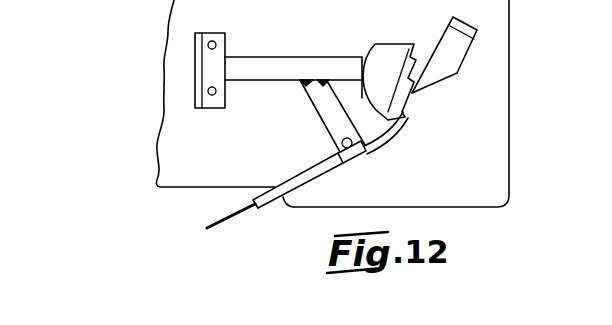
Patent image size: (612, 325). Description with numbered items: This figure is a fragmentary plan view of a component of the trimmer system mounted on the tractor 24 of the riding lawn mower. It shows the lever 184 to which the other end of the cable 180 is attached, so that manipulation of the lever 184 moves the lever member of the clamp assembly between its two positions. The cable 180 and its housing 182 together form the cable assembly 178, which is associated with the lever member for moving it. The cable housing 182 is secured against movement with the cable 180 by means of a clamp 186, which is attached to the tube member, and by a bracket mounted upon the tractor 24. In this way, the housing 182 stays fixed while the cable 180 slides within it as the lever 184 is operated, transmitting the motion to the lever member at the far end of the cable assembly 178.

The tractor 24 is at (509, 67).
The cable assembly 178 is at (332, 170).
The cable 180 is at (220, 221).
The cable housing 182 is at (307, 170).
The lever 184 is at (443, 37).
The clamp 186 is at (365, 153).